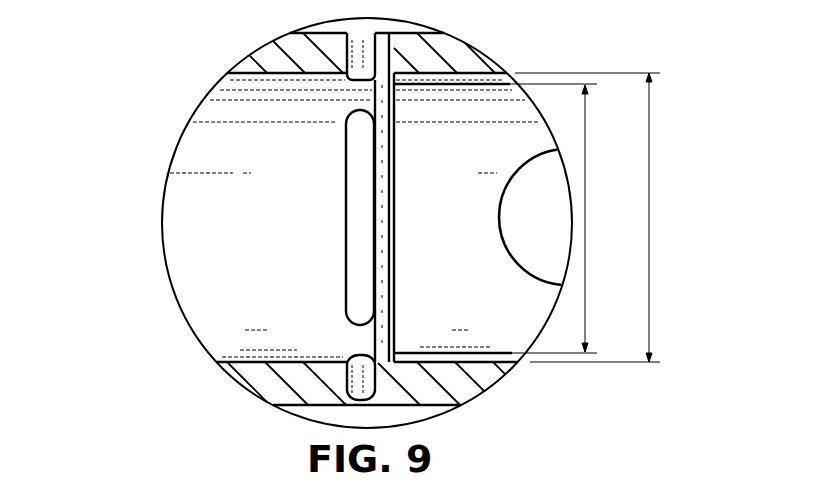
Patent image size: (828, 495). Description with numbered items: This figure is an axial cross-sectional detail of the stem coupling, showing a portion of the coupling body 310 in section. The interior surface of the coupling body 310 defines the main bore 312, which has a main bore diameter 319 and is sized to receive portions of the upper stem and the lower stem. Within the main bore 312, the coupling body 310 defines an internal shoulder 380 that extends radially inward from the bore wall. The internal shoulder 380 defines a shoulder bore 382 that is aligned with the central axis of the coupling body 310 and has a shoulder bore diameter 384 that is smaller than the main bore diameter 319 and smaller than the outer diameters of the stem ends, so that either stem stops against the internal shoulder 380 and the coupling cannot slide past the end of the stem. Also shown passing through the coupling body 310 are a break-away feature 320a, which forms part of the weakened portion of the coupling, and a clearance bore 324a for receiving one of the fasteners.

The coupling body 310 is at (423, 406).
The main bore 312 is at (187, 190).
The main bore diameter 319 is at (690, 246).
The break-away feature 320a is at (346, 203).
The clearance bore 324a is at (500, 243).
The internal shoulder 380 is at (397, 272).
The shoulder bore 382 is at (395, 112).
The shoulder bore diameter 384 is at (585, 195).